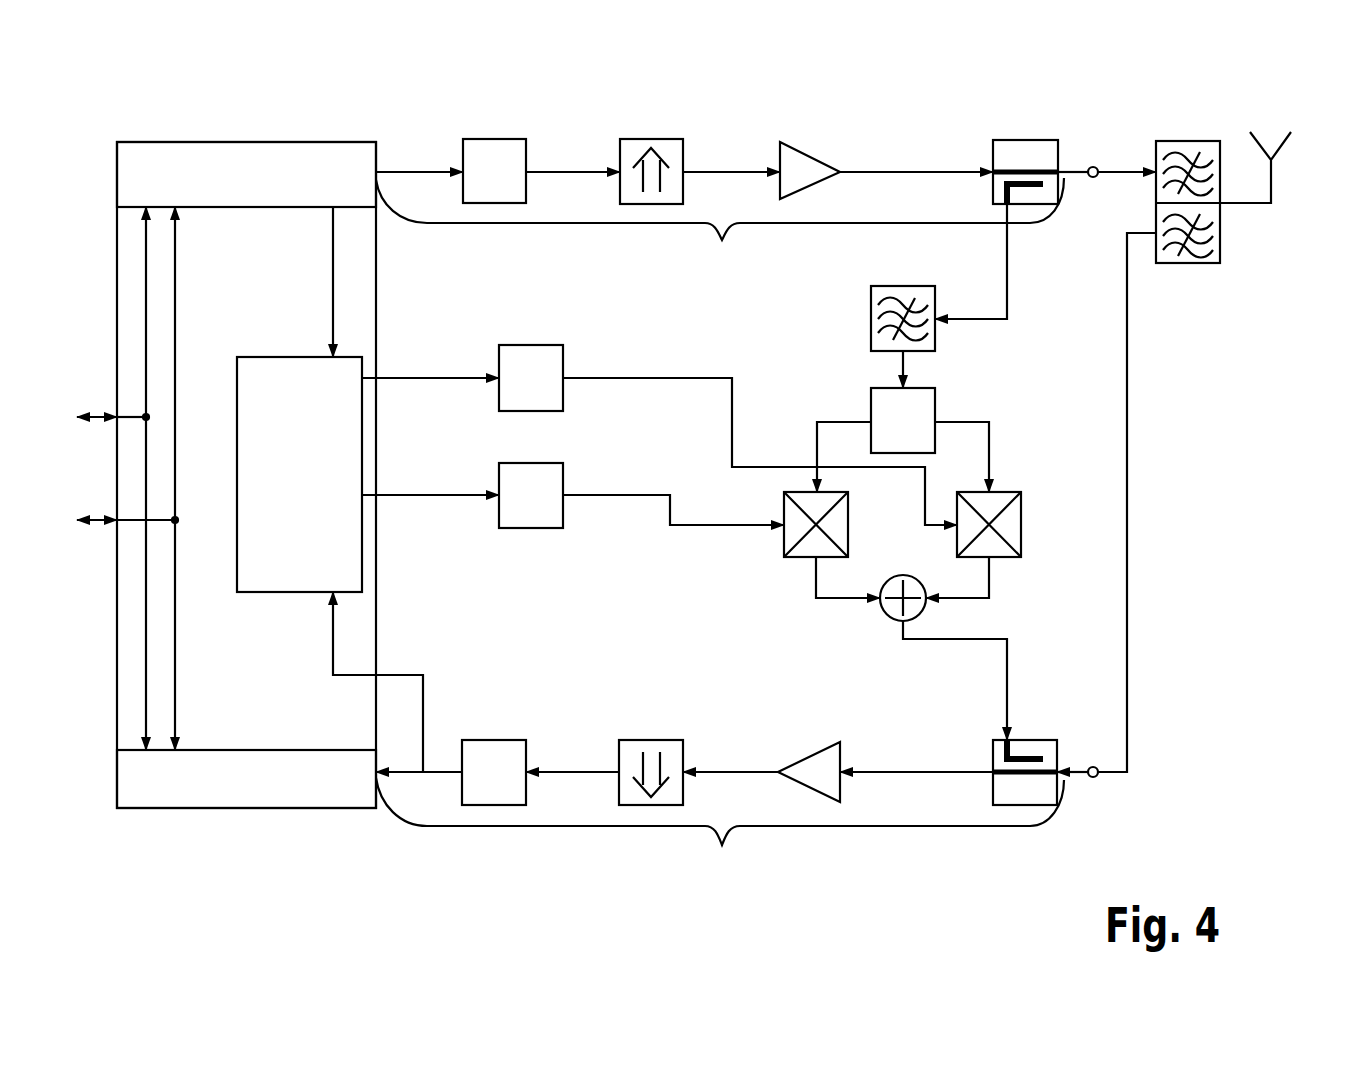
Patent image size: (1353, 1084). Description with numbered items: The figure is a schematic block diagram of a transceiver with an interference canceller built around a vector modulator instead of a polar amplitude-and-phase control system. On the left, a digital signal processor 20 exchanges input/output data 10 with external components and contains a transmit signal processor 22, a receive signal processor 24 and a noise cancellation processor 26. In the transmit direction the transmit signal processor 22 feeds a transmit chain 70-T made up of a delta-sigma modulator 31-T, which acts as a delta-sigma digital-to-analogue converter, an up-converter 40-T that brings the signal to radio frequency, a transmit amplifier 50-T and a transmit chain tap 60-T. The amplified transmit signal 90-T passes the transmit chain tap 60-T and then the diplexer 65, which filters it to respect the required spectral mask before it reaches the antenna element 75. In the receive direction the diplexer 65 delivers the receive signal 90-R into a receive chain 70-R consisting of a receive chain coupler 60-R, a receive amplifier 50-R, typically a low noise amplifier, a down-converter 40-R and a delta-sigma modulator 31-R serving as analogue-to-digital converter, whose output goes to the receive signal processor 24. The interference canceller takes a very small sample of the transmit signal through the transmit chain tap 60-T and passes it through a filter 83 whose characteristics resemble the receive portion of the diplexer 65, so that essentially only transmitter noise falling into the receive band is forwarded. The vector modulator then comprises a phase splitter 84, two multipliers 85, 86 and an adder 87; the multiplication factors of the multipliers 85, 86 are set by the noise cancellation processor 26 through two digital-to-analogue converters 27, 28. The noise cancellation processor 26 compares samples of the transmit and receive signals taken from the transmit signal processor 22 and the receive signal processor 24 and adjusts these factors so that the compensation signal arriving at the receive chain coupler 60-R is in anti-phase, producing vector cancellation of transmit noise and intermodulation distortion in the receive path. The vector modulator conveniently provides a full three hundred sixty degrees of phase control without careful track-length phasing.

The input/output data 10 is at (105, 422).
The digital signal processor 20 is at (117, 258).
The transmit signal processor 22 is at (378, 140).
The receive signal processor 24 is at (358, 810).
The noise cancellation processor 26 is at (260, 592).
The digital-to-analogue converter 27 is at (563, 395).
The digital-to-analogue converter 28 is at (563, 512).
The delta-sigma modulator 31-T is at (495, 139).
The delta-sigma modulator 31-R is at (500, 740).
The up-converter 40-T is at (655, 139).
The down-converter 40-R is at (663, 740).
The transmit amplifier 50-T is at (812, 150).
The receive amplifier 50-R is at (826, 752).
The transmit chain tap 60-T is at (1025, 140).
The receive chain coupler 60-R is at (993, 750).
The diplexer 65 is at (1222, 234).
The transmit chain 70-T is at (720, 225).
The receive chain 70-R is at (720, 827).
The antenna element 75 is at (1285, 160).
The filter 83 is at (935, 335).
The phase splitter 84 is at (935, 393).
The multiplier 85 is at (848, 520).
The multiplier 86 is at (1021, 520).
The adder 87 is at (924, 608).
The amplified transmit signal 90-T is at (1093, 166).
The receive signal 90-R is at (1093, 767).